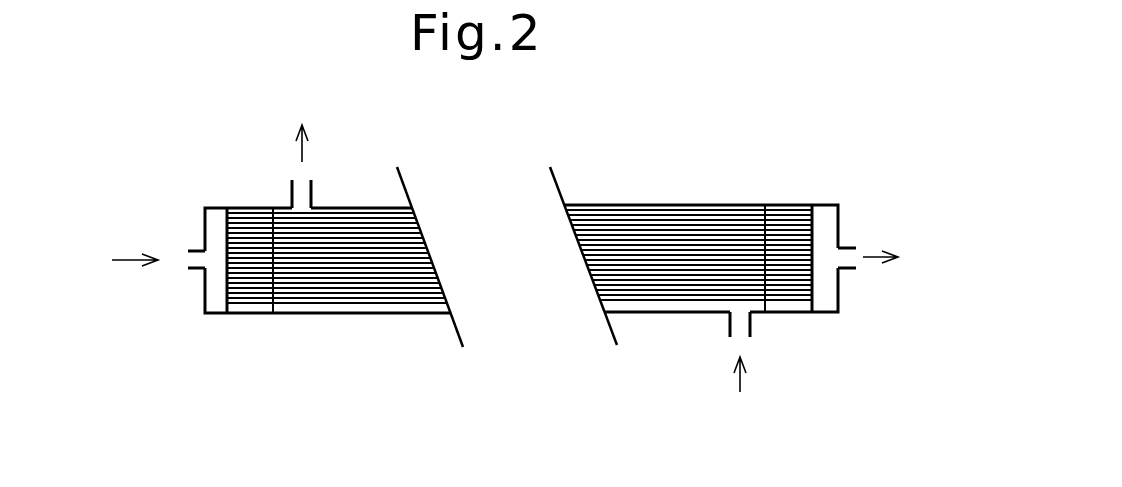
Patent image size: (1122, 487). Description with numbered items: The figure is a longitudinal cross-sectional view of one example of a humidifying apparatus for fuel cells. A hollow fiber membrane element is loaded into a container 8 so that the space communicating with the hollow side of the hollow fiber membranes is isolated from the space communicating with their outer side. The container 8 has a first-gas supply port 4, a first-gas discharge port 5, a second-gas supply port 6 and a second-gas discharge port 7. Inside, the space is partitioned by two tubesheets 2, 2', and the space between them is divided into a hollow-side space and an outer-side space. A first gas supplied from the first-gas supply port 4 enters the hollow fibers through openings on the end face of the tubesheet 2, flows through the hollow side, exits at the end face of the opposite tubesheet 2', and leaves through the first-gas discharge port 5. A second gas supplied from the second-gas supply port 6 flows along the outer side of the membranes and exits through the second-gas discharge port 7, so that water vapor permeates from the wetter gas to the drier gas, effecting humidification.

The tubesheet 2 is at (334, 221).
The tubesheet 2' is at (788, 202).
The first-gas supply port 4 is at (193, 261).
The first-gas discharge port 5 is at (852, 257).
The second-gas supply port 6 is at (738, 330).
The second-gas discharge port 7 is at (300, 188).
The container 8 is at (636, 203).